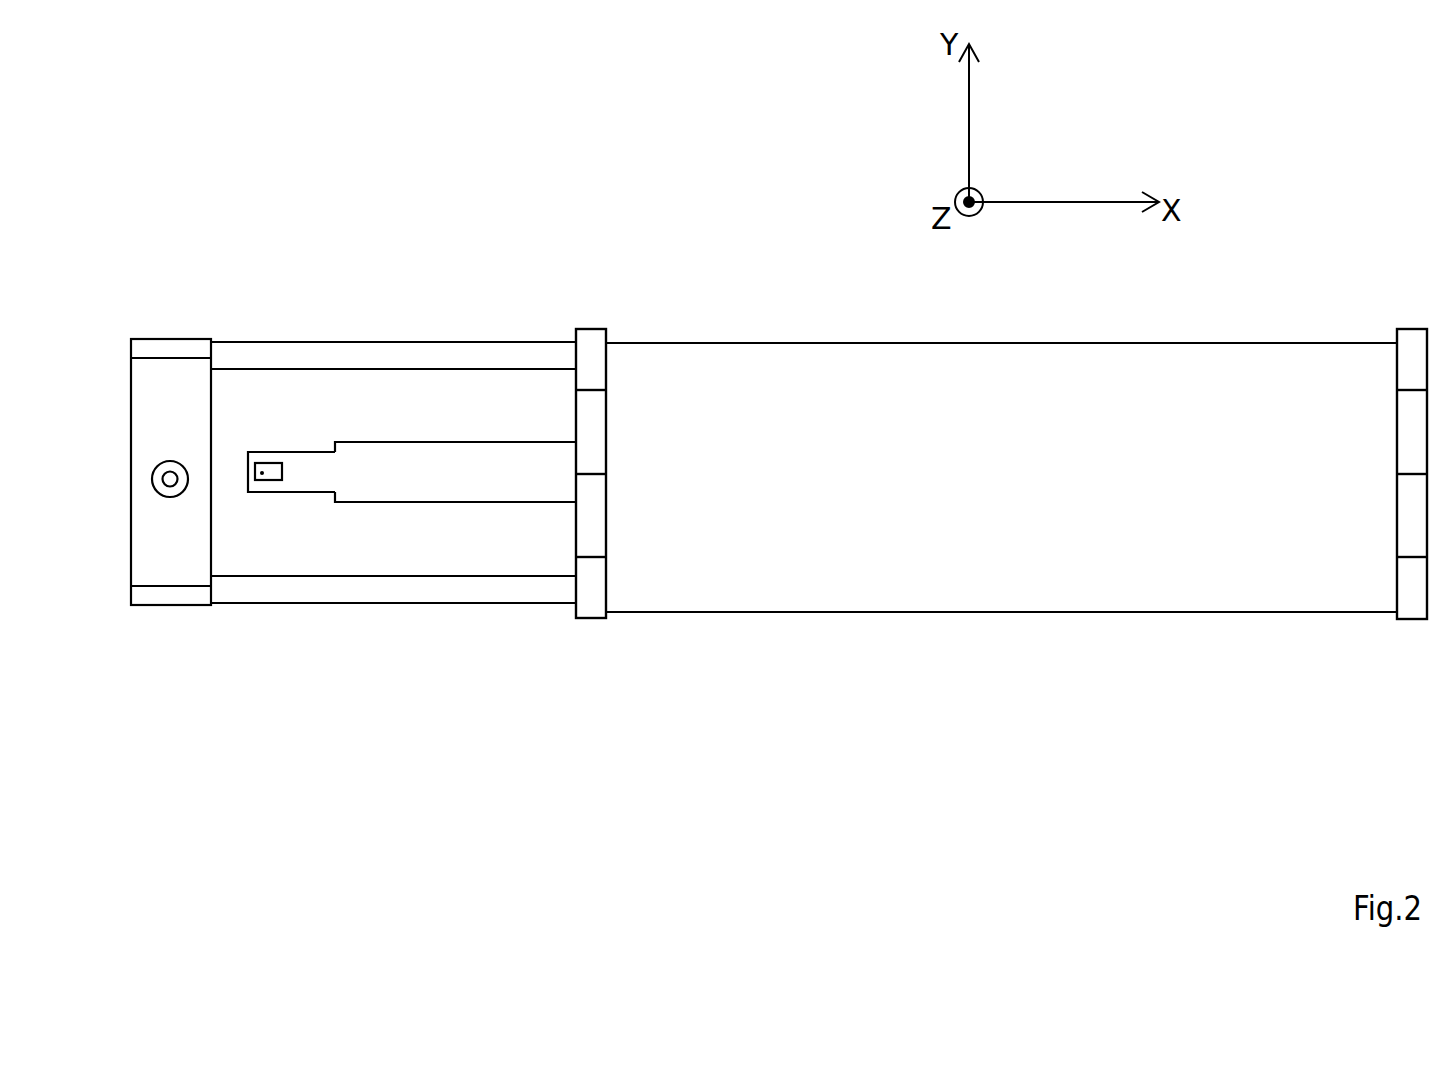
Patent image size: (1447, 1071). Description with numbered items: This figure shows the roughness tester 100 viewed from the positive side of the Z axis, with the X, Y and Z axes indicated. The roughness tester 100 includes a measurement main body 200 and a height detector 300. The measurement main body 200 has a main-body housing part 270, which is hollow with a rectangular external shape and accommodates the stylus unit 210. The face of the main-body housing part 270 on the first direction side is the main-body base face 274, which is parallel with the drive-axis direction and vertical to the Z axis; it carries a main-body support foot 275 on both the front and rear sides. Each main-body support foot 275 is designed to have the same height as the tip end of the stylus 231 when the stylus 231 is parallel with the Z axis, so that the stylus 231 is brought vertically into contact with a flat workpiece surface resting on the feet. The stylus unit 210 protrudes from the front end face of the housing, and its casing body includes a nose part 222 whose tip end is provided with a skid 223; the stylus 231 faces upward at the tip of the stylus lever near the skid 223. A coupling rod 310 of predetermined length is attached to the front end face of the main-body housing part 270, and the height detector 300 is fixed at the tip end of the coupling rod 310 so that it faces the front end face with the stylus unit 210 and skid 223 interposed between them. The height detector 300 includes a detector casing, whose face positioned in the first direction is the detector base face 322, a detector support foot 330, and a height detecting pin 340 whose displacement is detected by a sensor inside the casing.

The roughness tester 100 is at (806, 244).
The measurement main body 200 is at (1063, 352).
The stylus unit 210 is at (410, 453).
The nose part 222 is at (315, 482).
The skid 223 is at (255, 452).
The stylus 231 is at (262, 473).
The main-body housing part 270 is at (1090, 588).
The main-body base face 274 is at (952, 605).
The main-body support foot 275 is at (590, 389).
The height detector 300 is at (170, 557).
The coupling rod 310 is at (412, 352).
The detector base face 322 is at (137, 522).
The detector support foot 330 is at (178, 344).
The height detecting pin 340 is at (170, 477).